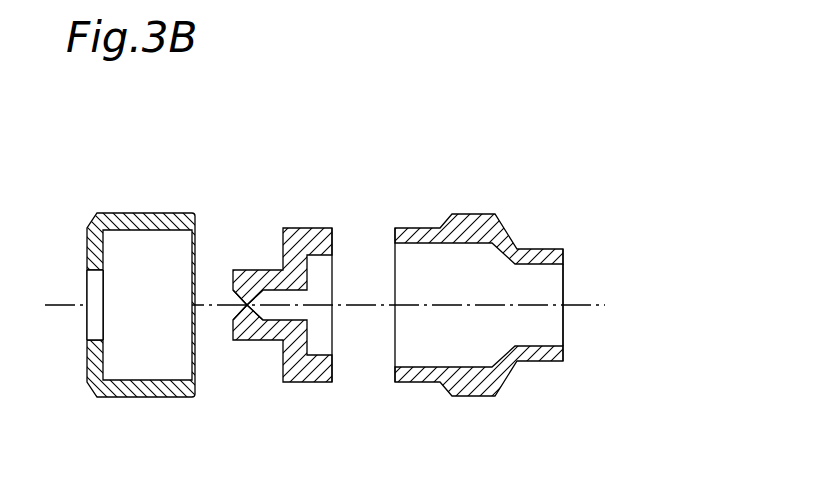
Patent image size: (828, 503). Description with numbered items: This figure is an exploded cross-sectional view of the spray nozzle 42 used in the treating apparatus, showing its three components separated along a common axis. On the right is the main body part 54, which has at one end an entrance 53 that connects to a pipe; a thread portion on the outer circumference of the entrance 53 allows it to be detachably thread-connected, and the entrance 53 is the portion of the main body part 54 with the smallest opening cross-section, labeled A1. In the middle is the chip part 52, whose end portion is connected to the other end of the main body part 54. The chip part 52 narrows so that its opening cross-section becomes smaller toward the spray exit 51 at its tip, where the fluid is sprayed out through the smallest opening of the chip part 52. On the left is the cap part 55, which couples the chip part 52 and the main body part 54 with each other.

The spray nozzle 42 is at (541, 164).
The spray exit 51 is at (244, 308).
The chip part 52 is at (303, 383).
The entrance 53 is at (564, 294).
The main body part 54 is at (475, 397).
The cap part 55 is at (137, 398).